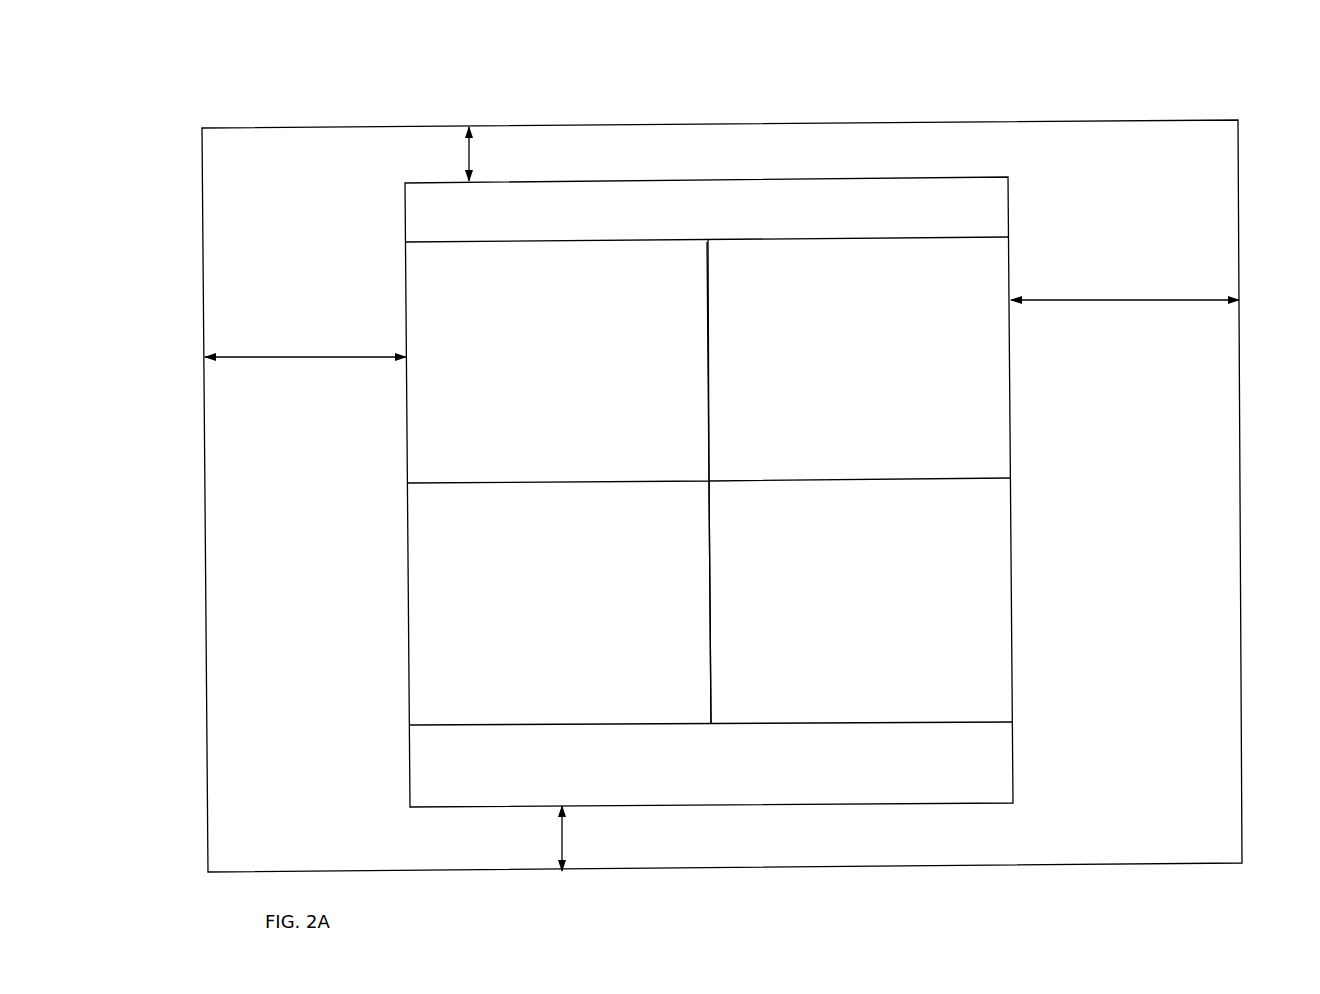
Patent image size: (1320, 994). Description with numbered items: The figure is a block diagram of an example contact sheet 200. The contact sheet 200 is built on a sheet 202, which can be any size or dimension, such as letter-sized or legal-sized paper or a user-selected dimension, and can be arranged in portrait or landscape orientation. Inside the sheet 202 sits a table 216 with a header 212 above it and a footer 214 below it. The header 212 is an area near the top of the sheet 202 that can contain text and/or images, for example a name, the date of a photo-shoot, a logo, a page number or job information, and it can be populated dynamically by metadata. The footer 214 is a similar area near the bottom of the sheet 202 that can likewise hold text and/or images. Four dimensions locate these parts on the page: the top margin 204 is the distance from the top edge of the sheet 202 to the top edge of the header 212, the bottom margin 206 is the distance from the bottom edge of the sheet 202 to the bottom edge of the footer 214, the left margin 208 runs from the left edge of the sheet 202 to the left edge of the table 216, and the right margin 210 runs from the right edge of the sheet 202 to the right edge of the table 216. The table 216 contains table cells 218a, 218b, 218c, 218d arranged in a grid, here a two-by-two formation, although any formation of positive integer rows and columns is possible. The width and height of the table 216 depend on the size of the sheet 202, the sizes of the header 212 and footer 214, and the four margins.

The contact sheet 200 is at (222, 62).
The sheet 202 is at (432, 127).
The top margin 204 is at (490, 154).
The bottom margin 206 is at (583, 838).
The left margin 208 is at (305, 347).
The right margin 210 is at (1125, 287).
The header 212 is at (706, 218).
The footer 214 is at (710, 746).
The table 216 is at (405, 282).
The table cell 218a is at (558, 362).
The table cell 218b is at (859, 360).
The table cell 218c is at (632, 602).
The table cell 218d is at (796, 602).